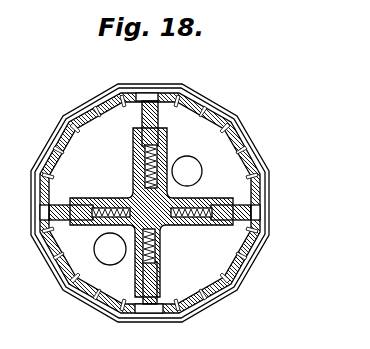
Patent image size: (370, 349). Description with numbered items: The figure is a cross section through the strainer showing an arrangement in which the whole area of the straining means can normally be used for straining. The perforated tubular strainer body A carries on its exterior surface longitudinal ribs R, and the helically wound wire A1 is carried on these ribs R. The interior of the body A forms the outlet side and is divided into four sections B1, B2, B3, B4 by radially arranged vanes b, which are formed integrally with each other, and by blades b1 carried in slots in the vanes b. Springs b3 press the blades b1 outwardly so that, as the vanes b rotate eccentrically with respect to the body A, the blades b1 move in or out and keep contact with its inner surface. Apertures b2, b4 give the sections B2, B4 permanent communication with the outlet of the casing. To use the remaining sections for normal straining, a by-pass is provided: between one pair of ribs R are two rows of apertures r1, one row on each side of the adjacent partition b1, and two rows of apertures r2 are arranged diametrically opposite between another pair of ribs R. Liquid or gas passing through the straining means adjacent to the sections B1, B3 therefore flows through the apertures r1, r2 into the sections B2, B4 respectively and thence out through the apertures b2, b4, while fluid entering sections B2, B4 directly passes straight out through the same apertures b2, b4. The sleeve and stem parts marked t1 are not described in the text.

The longitudinal ribs R is at (195, 304).
The strainer body A is at (271, 157).
The wire A1 is at (246, 218).
The cross-shaped hub with sleeves t1 is at (164, 130).
The apertures r1 is at (158, 101).
The apertures r2 is at (154, 304).
The vanes b is at (186, 107).
The blades b1 is at (52, 219).
The aperture b2 is at (187, 170).
The springs b3 is at (130, 203).
The aperture b4 is at (103, 257).
The section B1 is at (93, 138).
The section B2 is at (222, 149).
The section B3 is at (212, 270).
The section B4 is at (78, 247).